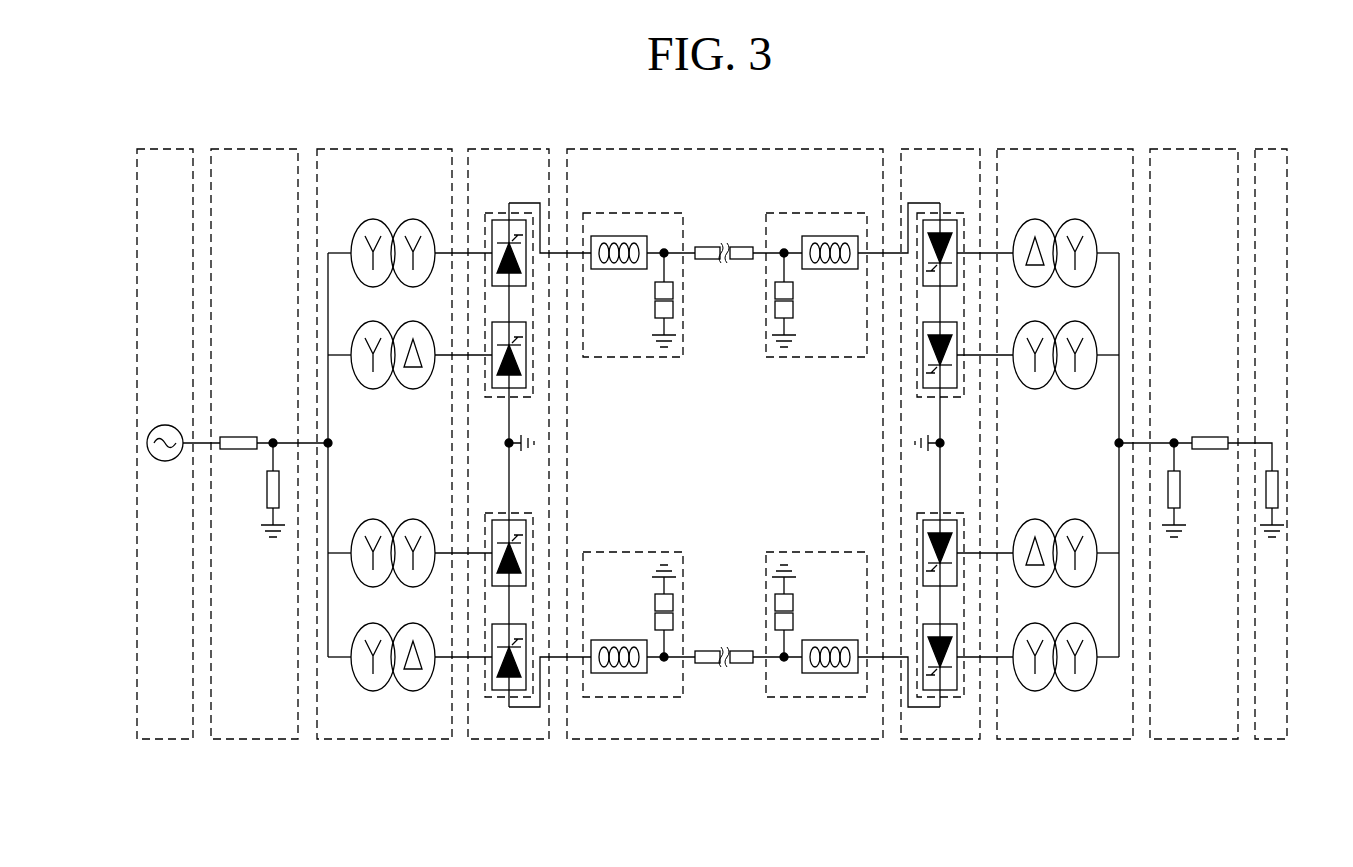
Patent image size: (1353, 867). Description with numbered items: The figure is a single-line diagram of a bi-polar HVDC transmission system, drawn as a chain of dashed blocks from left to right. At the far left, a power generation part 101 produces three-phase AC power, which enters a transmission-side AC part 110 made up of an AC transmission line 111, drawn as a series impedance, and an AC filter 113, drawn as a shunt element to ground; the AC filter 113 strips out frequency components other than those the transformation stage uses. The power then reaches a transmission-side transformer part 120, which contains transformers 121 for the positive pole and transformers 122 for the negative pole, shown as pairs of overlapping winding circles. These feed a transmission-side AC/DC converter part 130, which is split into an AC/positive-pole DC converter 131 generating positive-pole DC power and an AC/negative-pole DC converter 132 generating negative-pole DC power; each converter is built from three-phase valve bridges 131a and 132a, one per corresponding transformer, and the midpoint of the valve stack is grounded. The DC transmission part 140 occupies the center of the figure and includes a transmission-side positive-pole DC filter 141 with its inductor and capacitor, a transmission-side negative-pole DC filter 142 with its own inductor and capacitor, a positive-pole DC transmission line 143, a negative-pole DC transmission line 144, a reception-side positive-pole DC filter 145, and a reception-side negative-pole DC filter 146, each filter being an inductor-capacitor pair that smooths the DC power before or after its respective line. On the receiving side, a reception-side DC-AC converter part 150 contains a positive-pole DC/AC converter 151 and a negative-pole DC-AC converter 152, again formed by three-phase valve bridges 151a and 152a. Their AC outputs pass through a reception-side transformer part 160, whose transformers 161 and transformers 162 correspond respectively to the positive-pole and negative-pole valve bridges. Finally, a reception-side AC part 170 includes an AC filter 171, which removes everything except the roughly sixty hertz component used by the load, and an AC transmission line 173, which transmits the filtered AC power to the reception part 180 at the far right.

The power generation part 101 is at (165, 149).
The transmission-side AC part 110 is at (255, 149).
The AC transmission line 111 is at (240, 437).
The AC filter 113 is at (267, 491).
The transmission-side transformer part 120 is at (385, 149).
The transformer for the positive pole 121 is at (373, 219).
The transformer for the negative pole 122 is at (373, 519).
The transmission-side AC/DC converter part 130 is at (508, 149).
The AC/positive-pole DC converter 131 is at (490, 213).
The AC/negative-pole DC converter 132 is at (500, 697).
The three-phase valve bridge 131a is at (520, 213).
The three-phase valve bridge 132a is at (528, 525).
The DC transmission part 140 is at (730, 149).
The transmission-side positive-pole DC filter 141 is at (632, 213).
The transmission-side negative-pole DC filter 142 is at (632, 552).
The positive-pole DC transmission line 143 is at (710, 247).
The negative-pole DC transmission line 144 is at (710, 651).
The reception-side positive-pole DC filter 145 is at (815, 213).
The reception-side negative-pole DC filter 146 is at (815, 552).
The reception-side DC-AC converter part 150 is at (957, 149).
The positive-pole DC/AC converter 151 is at (960, 213).
The negative-pole DC-AC converter 152 is at (950, 697).
The three-phase valve bridge 151a is at (933, 213).
The three-phase valve bridge 152a is at (922, 525).
The reception-side transformer part 160 is at (1065, 149).
The transformer 161 is at (1036, 219).
The transformer 162 is at (1036, 519).
The reception-side AC part 170 is at (1185, 149).
The AC filter 171 is at (1180, 490).
The AC transmission line 173 is at (1210, 437).
The reception part 180 is at (1270, 149).